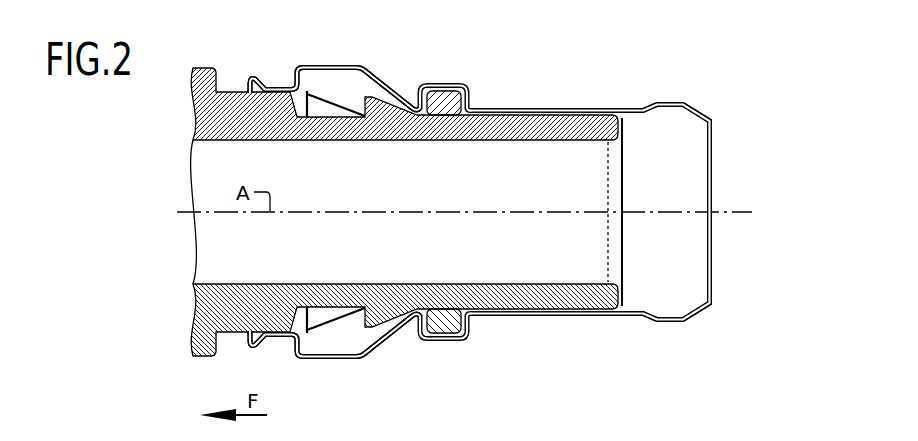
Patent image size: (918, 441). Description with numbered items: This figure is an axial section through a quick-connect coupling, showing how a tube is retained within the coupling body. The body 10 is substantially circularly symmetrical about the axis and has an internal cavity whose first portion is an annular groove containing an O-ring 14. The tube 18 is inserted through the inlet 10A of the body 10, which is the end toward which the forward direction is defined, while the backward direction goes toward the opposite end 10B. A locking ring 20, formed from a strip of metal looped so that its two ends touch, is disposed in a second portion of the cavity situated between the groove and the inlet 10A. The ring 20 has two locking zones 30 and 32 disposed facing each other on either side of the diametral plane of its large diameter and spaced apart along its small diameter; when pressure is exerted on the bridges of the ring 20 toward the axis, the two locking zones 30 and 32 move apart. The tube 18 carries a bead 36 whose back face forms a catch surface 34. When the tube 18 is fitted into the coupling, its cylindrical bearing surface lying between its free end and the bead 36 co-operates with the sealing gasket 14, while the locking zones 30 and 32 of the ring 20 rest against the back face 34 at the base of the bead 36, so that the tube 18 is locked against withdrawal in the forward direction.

The body 10 is at (527, 107).
The inlet 10A is at (249, 78).
The opposite end 10B is at (712, 120).
The O-ring 14 is at (455, 86).
The tube 18 is at (494, 143).
The locking ring 20 is at (323, 66).
The locking zone 30 is at (339, 282).
The locking zone 32 is at (338, 143).
The catch surface 34 is at (368, 66).
The bead 36 is at (402, 93).